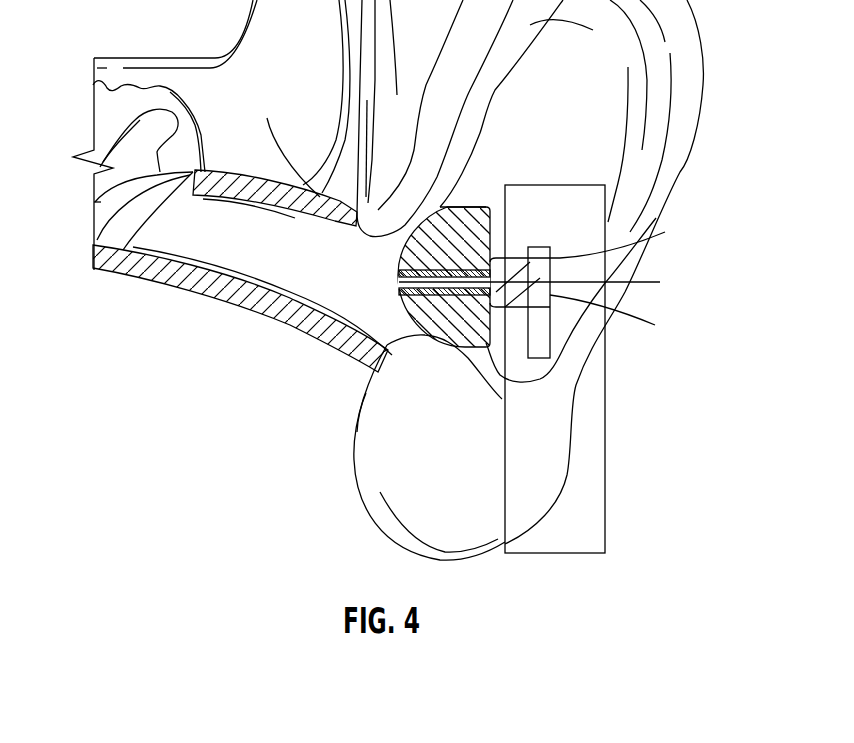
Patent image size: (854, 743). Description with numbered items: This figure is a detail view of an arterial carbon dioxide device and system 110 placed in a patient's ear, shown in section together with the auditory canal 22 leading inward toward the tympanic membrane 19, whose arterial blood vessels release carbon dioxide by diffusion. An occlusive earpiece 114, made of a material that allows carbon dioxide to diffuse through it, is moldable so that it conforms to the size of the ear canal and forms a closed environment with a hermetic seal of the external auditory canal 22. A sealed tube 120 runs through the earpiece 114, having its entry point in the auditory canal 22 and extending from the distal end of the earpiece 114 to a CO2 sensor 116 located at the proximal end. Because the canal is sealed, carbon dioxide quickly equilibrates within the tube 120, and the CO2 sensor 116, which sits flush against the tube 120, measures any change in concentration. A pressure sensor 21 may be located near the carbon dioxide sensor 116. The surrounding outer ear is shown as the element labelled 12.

The ear 12 is at (637, 250).
The tympanic membrane 19 is at (113, 237).
The auditory canal 22 is at (308, 241).
The arterial carbon dioxide device and system 110 is at (662, 292).
The occlusive earpiece 114 is at (480, 207).
The CO2 sensor 116 is at (588, 309).
The sealed tube 120 is at (440, 330).
The pressure sensor 21 is at (545, 368).